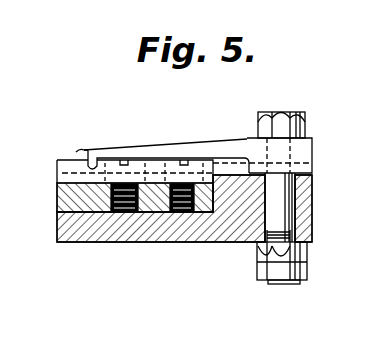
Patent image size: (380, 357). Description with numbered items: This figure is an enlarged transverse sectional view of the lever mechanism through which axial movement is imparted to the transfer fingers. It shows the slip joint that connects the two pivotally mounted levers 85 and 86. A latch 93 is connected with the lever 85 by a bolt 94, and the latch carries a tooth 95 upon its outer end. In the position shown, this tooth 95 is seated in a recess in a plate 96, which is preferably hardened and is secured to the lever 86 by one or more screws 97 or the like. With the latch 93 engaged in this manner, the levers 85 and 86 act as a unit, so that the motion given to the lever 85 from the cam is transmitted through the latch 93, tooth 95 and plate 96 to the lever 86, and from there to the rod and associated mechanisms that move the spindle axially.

The lever 85 is at (308, 218).
The lever 86 is at (60, 197).
The latch 93 is at (308, 148).
The bolt 94 is at (300, 196).
The tooth 95 is at (84, 151).
The plate 96 is at (62, 169).
The screws 97 is at (177, 213).